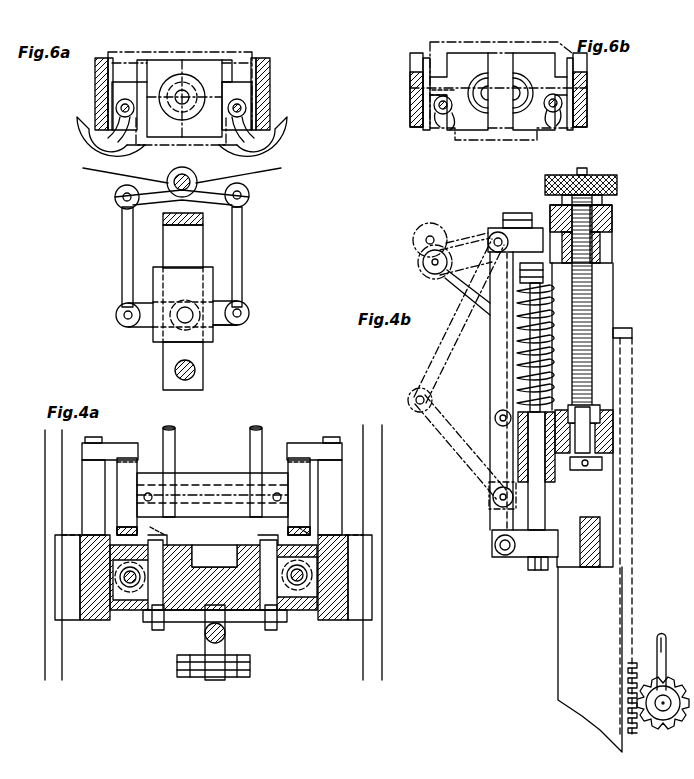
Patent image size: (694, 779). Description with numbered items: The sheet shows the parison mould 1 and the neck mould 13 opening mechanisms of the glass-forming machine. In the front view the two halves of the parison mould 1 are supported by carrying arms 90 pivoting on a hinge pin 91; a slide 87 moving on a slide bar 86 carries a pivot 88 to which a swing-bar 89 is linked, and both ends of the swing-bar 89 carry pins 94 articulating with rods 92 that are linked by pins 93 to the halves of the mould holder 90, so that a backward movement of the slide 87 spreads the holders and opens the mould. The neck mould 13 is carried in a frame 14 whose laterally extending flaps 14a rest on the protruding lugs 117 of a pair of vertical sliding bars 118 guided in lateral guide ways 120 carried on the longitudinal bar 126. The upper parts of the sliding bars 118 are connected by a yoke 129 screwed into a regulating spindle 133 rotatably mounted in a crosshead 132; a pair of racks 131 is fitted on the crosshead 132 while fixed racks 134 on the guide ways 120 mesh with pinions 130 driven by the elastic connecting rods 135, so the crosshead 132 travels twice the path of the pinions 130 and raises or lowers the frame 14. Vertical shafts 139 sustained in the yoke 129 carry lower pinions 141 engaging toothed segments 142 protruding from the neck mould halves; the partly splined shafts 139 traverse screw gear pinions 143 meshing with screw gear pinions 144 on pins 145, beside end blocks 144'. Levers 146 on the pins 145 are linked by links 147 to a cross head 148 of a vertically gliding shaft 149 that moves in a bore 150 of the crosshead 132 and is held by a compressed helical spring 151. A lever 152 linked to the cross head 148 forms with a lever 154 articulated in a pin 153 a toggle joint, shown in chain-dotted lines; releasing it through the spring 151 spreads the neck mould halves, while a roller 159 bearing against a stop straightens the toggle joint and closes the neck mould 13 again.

In FIG. 6A, the parison mould 1 is at (72, 126).
In FIG. 6A, the neck mould 13 is at (195, 62).
In FIG. 6B, the neck mould 13 is at (515, 58).
In FIG. 6A, the frame 14 is at (168, 44).
In FIG. 6B, the frame 14 is at (492, 140).
In FIG. 6A, the laterally extending flaps 14a is at (82, 122).
In FIG. 6A, the slide bar 86 is at (204, 366).
In FIG. 6A, the slide 87 is at (213, 290).
In FIG. 6A, the pivot 88 is at (172, 318).
In FIG. 6A, the swing-bar 89 is at (225, 328).
In FIG. 6A, the carrying arms 90 is at (112, 190).
In FIG. 6A, the hinge pin 91 is at (166, 212).
In FIG. 6A, the rods 92 is at (126, 252).
In FIG. 6A, the pins 93 is at (130, 207).
In FIG. 6A, the pins 94 is at (118, 314).
In FIG. 6A, the protruding lugs 117 is at (110, 58).
In FIG. 6B, the protruding lugs 117 is at (425, 120).
In FIG. 6A, the vertical sliding bars 118 is at (112, 100).
In FIG. 4B, the vertical sliding bars 118 is at (558, 620).
In FIG. 4A, the vertical sliding bars 118 is at (110, 602).
In FIG. 4A, the lateral guide ways 120 is at (68, 535).
In FIG. 4A, the lower longitudinal bar 126 is at (50, 492).
In FIG. 4B, the yoke 129 is at (613, 226).
In FIG. 4B, the pinions 130 is at (658, 735).
In FIG. 4A, the pinions 130 is at (140, 468).
In FIG. 4B, the racks 131 is at (628, 672).
In FIG. 4A, the racks 131 is at (320, 527).
In FIG. 4B, the crosshead 132 is at (613, 432).
In FIG. 4A, the crosshead 132 is at (205, 550).
In FIG. 4B, the regulating spindle 133 is at (595, 302).
In FIG. 4A, the racks 134 is at (100, 450).
In FIG. 4B, the elastic connecting rods 135 is at (661, 632).
In FIG. 4A, the elastic connecting rods 135 is at (252, 428).
In FIG. 6A, the vertical shafts 139 is at (110, 137).
In FIG. 6B, the vertical shafts 139 is at (445, 115).
In FIG. 4A, the vertical shafts 139 is at (125, 590).
In FIG. 6A, the pinions 141 is at (95, 165).
In FIG. 6B, the pinions 141 is at (438, 125).
In FIG. 6A, the toothed segments 142 is at (95, 78).
In FIG. 6B, the toothed segments 142 is at (447, 68).
In FIG. 4A, the screw gear pinions 143 is at (130, 585).
In FIG. 4A, the screw gear pinions 144 is at (213, 565).
In FIG. 4A, the end block 144' is at (221, 577).
In FIG. 4A, the pins 145 is at (158, 630).
In FIG. 4A, the levers 146 is at (175, 622).
In FIG. 4A, the links 147 is at (205, 643).
In FIG. 4B, the cross head 148 is at (512, 557).
In FIG. 4A, the cross head 148 is at (220, 680).
In FIG. 4B, the vertically gliding shaft 149 is at (540, 497).
In FIG. 4A, the vertically gliding shaft 149 is at (212, 645).
In FIG. 4B, the bore 150 is at (510, 450).
In FIG. 4B, the compressed helical spring 151 is at (530, 360).
In FIG. 4B, the lever 152 is at (492, 522).
In FIG. 4B, the pin 153 is at (495, 412).
In FIG. 4B, the lever 154 is at (495, 378).
In FIG. 4B, the roller 159 is at (423, 263).